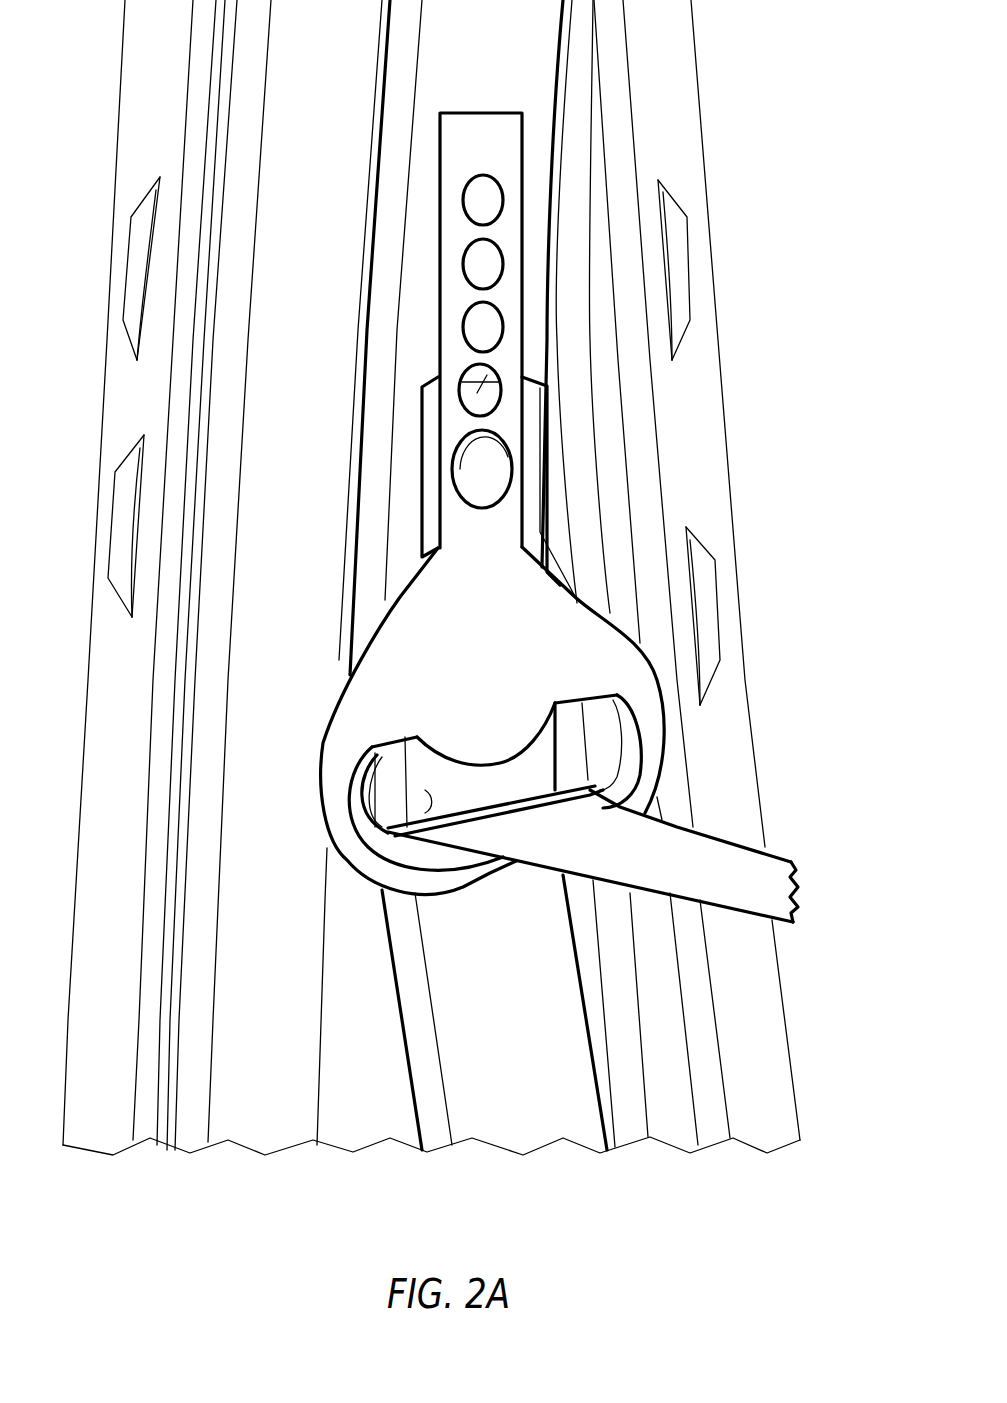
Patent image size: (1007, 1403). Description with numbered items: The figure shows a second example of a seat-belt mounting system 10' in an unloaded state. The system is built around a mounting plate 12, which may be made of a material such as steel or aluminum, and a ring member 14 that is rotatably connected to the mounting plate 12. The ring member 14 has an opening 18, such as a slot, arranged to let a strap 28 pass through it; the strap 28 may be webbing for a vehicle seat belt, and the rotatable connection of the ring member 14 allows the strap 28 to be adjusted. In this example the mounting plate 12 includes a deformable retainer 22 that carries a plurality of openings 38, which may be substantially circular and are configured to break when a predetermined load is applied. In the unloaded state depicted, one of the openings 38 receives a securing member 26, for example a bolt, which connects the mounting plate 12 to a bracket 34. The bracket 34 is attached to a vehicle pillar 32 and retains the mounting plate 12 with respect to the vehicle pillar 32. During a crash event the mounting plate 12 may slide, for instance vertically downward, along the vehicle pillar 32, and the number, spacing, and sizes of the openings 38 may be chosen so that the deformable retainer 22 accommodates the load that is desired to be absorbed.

The system 10' is at (449, 577).
The mounting plate 12 is at (500, 125).
The ring member 14 is at (413, 648).
The opening 18 is at (430, 805).
The deformable retainer 22 is at (485, 200).
The securing member 26 is at (483, 482).
The strap 28 is at (725, 860).
The vehicle pillar 32 is at (479, 52).
The bracket 34 is at (548, 388).
The openings 38 is at (487, 375).